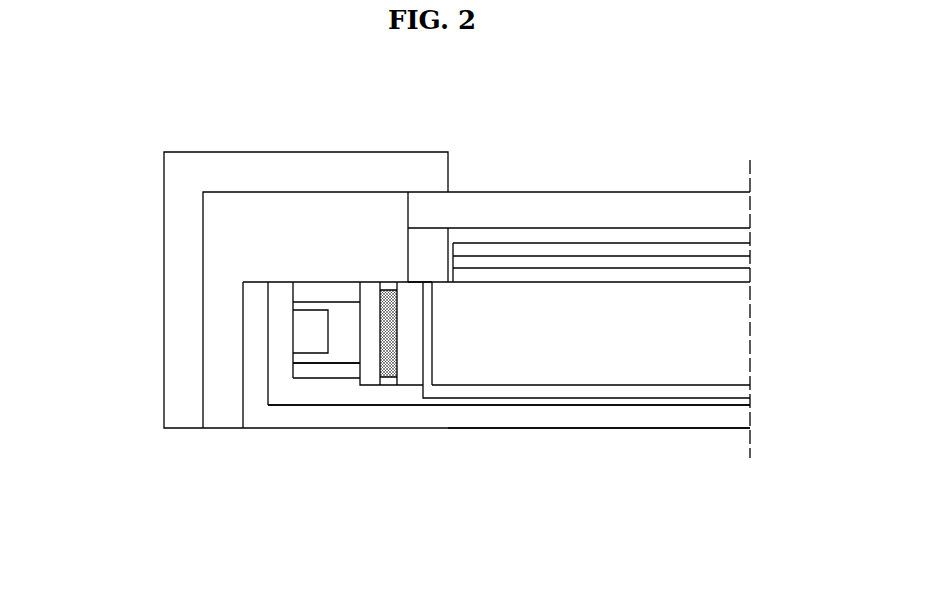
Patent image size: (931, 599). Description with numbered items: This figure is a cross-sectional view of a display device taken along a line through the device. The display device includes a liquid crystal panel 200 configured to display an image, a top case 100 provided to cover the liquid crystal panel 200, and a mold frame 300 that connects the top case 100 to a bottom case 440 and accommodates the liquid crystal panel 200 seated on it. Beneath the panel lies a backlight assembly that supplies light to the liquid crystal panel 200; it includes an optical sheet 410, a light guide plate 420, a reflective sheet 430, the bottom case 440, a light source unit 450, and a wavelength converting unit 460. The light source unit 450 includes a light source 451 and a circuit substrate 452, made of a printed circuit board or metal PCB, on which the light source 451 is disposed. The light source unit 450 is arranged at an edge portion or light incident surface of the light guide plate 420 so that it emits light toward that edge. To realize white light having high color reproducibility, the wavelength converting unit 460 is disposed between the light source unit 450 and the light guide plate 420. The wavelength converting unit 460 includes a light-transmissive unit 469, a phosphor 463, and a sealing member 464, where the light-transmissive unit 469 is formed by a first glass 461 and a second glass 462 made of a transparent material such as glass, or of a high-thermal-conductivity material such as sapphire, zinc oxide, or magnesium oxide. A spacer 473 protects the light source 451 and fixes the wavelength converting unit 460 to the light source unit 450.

The top case 100 is at (310, 166).
The liquid crystal panel 200 is at (565, 205).
The mold frame 300 is at (220, 237).
The optical sheet 410 is at (765, 229).
The light guide plate 420 is at (742, 335).
The reflective sheet 430 is at (742, 390).
The bottom case 440 is at (742, 419).
The light source unit 450 is at (201, 392).
The light source 451 is at (283, 333).
The circuit substrate 452 is at (257, 353).
The wavelength converting unit 460 is at (531, 415).
The first glass 461 is at (362, 378).
The second glass 462 is at (581, 392).
The phosphor 463 is at (392, 363).
The sealing member 464 is at (390, 380).
The light-transmissive unit 469 is at (408, 192).
The spacer 473 is at (318, 372).